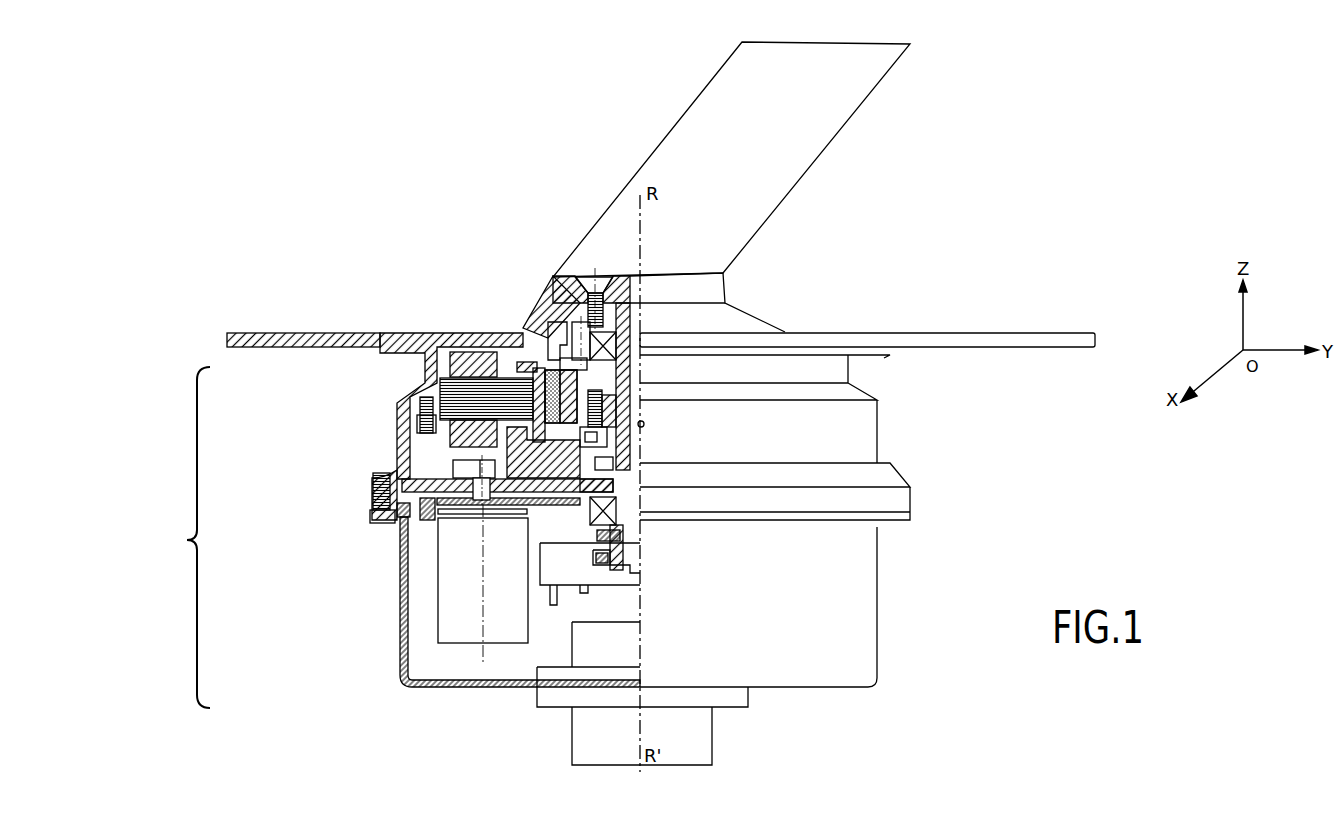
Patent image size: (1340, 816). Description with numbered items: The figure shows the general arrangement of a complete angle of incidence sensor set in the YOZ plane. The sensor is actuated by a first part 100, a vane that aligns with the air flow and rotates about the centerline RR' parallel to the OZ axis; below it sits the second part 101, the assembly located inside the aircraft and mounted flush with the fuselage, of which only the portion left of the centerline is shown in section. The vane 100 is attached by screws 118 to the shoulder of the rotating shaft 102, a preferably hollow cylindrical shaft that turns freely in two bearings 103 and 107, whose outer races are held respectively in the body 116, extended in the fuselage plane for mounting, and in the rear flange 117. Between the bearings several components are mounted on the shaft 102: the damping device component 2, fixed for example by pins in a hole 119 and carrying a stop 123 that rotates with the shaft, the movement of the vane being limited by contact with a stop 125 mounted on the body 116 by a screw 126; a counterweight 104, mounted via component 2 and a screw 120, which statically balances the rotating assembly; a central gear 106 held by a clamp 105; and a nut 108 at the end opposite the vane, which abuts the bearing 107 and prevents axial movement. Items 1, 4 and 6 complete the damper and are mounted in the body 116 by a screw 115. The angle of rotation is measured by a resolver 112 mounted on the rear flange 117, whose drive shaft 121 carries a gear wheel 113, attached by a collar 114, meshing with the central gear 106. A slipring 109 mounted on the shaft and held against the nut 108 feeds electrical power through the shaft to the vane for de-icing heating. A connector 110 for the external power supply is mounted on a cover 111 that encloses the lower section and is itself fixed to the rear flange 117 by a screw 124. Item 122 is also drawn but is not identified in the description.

The damper component 1 is at (423, 333).
The damping device component 2 is at (588, 405).
The damper component 4 is at (463, 355).
The damper component 6 is at (468, 400).
The first part (vane) 100 is at (839, 120).
The second part (aircraft internal assembly) 101 is at (184, 537).
The rotating shaft 102 is at (634, 300).
The bearing 103 is at (610, 343).
The counterweight 104 is at (614, 464).
The clamp 105 is at (556, 456).
The central gear 106 is at (607, 486).
The bearing 107 is at (613, 512).
The nut 108 is at (620, 535).
The electrical power feed means (slipring) 109 is at (572, 570).
The connector 110 is at (705, 723).
The cover 111 is at (477, 688).
The angle measuring means (resolver) 112 is at (465, 628).
The gear wheel 113 is at (372, 503).
The collar 114 is at (463, 470).
The screw 115 is at (412, 400).
The body 116 is at (268, 333).
The rear flange 117 is at (401, 520).
The screw 118 is at (598, 280).
The hole 119 is at (645, 423).
The screw 120 is at (608, 442).
The drive shaft 121 is at (420, 484).
The retaining ring 122 is at (627, 573).
The stop 123 is at (573, 376).
The screw 124 is at (372, 520).
The stop 125 is at (528, 367).
The screw 126 is at (555, 340).